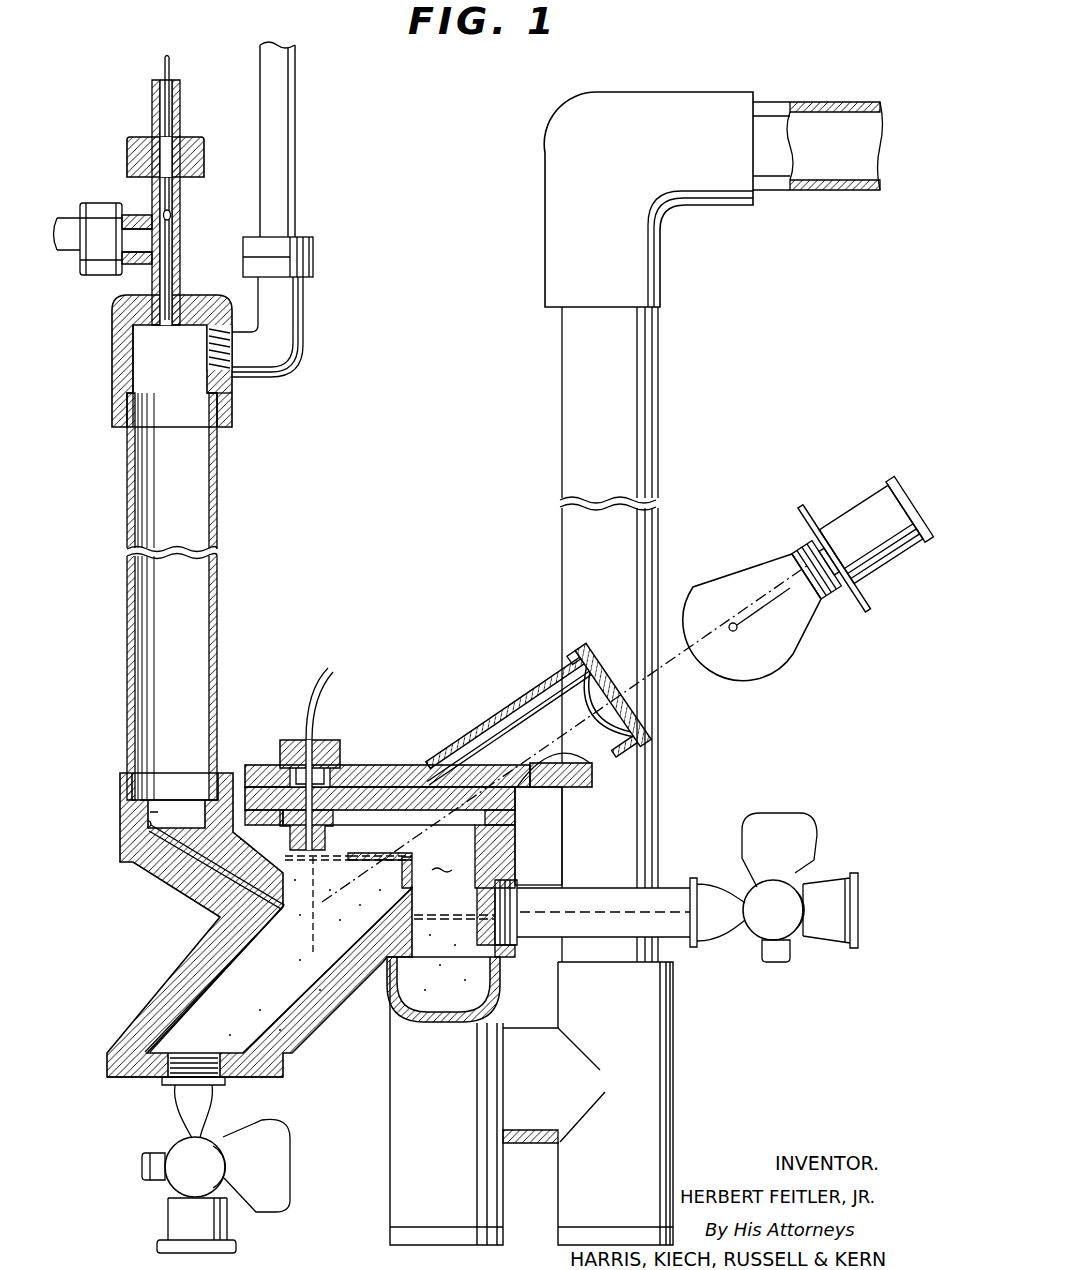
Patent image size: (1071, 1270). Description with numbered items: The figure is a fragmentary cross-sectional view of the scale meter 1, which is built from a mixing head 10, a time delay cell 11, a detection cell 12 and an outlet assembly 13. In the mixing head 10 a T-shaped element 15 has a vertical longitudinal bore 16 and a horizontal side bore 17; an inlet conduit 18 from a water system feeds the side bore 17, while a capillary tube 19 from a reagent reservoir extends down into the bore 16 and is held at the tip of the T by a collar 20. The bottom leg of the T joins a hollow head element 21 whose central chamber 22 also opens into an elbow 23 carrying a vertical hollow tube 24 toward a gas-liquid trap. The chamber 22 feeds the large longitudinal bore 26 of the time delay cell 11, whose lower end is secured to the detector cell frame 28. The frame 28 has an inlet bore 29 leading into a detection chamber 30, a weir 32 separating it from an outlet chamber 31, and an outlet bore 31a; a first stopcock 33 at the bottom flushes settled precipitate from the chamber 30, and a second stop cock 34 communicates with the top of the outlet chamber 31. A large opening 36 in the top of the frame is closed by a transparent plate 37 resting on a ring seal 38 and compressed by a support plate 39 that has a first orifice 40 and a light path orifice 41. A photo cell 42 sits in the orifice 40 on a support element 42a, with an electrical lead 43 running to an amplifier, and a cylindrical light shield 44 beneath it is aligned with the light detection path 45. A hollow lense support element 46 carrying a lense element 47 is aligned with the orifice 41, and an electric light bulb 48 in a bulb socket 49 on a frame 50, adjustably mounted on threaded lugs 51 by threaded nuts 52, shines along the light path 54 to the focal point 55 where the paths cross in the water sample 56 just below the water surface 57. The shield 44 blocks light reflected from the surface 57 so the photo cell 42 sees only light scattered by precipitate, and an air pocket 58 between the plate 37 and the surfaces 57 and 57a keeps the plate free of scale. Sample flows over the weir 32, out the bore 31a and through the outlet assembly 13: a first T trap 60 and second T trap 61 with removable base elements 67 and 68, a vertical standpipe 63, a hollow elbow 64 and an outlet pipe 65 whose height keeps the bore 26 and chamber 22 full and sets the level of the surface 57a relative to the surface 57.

The scale meter 1 is at (436, 626).
The mixing head 10 is at (108, 338).
The time delay cell 11 is at (226, 520).
The detection cell 12 is at (399, 764).
The outlet assembly 13 is at (678, 1047).
The T-shaped element 15 is at (182, 246).
The vertical longitudinal bore 16 is at (171, 217).
The horizontal side bore 17 is at (140, 263).
The inlet conduit 18 is at (62, 222).
The capillary tube 19 is at (163, 58).
The collar 20 is at (192, 140).
The hollow head element 21 is at (232, 407).
The central chamber 22 is at (128, 381).
The elbow 23 is at (292, 302).
The vertical hollow tube 24 is at (286, 148).
The large longitudinal bore 26 is at (208, 609).
The detector cell frame 28 is at (185, 887).
The inlet bore 29 is at (150, 820).
The detection chamber 30 is at (292, 1042).
The outlet chamber 31 is at (480, 876).
The outlet bore 31a is at (492, 991).
The weir 32 is at (426, 872).
The first stopcock 33 is at (170, 1150).
The second stop cock 34 is at (797, 893).
The large opening 36 is at (366, 830).
The transparent plate 37 is at (515, 803).
The ring seal 38 is at (515, 818).
The support plate 39 is at (575, 797).
The first orifice 40 is at (334, 810).
The light path orifice 41 is at (592, 770).
The photo cell 42 is at (290, 768).
The support element 42a is at (292, 740).
The electrical lead 43 is at (331, 746).
The cylindrical light shield 44 is at (228, 878).
The light detection path 45 is at (292, 958).
The hollow lense support element 46 is at (556, 673).
The lense element 47 is at (628, 712).
The electric light bulb 48 is at (766, 672).
The bulb socket 49 is at (878, 500).
The frame 50 is at (814, 509).
The threaded lugs 51 is at (805, 617).
The threaded nuts 52 is at (797, 565).
The light path 54 is at (546, 700).
The focal point 55 is at (362, 890).
The water sample 56 is at (352, 872).
The water surface 57 is at (386, 853).
The water surface 57a is at (520, 911).
The air pocket 58 is at (448, 857).
The first T trap 60 is at (390, 1135).
The second T trap 61 is at (572, 1163).
The vertical standpipe 63 is at (562, 388).
The hollow elbow 64 is at (651, 92).
The outlet pipe 65 is at (852, 190).
The removable base element 67 is at (392, 1237).
The removable base element 68 is at (566, 1233).